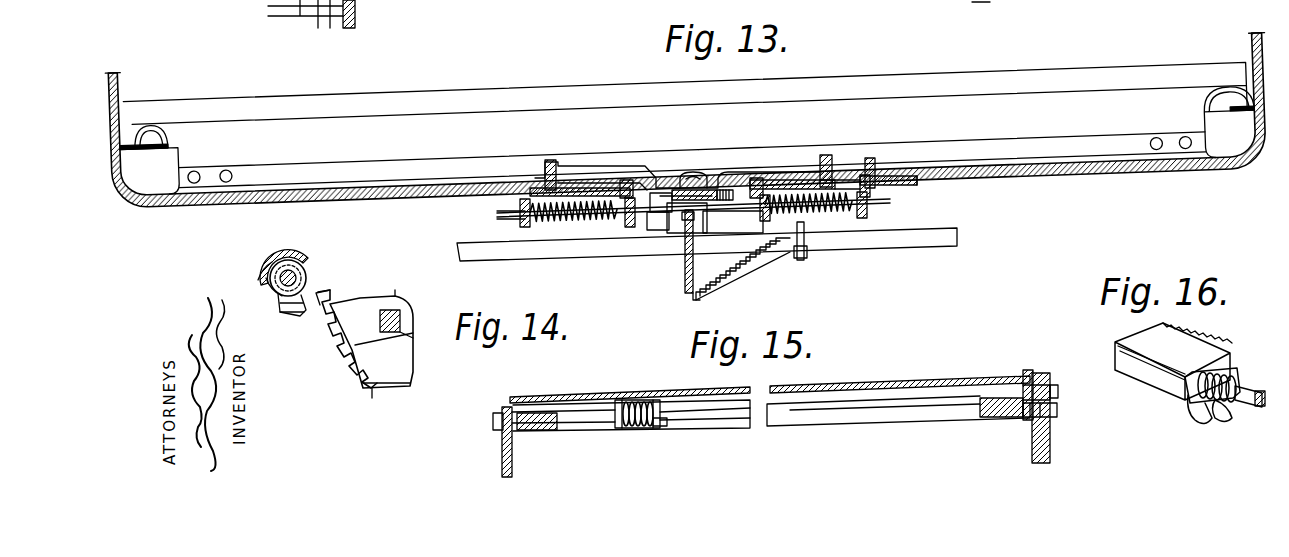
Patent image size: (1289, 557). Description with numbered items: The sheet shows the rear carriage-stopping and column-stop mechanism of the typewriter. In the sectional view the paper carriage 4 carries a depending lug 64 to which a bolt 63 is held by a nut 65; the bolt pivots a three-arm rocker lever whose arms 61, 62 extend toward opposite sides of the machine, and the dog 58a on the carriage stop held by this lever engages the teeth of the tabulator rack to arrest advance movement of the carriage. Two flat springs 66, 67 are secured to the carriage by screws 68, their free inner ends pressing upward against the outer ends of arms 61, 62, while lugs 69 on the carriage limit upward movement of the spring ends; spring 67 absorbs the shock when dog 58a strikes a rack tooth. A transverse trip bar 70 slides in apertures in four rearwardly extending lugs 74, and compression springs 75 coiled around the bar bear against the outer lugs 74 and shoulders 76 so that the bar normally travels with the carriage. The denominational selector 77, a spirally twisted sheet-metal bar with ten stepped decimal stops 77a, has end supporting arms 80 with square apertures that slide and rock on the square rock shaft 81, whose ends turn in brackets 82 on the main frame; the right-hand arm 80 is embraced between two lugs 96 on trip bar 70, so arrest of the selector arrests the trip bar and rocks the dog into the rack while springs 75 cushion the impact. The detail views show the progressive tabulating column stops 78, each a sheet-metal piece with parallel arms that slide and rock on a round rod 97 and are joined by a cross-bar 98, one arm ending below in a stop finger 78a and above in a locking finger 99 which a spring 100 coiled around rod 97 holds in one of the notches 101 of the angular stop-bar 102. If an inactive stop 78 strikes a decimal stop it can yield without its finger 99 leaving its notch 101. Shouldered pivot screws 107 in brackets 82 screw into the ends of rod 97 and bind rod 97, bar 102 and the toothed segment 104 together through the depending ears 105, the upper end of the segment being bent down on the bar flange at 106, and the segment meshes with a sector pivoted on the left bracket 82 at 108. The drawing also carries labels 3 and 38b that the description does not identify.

In FIG. 13, the top plate 3 is at (252, 124).
In FIG. 13, the paper carriage 4 is at (1050, 177).
In FIG. 13, the lug 38b is at (655, 221).
In FIG. 13, the dog 58a is at (730, 190).
In FIG. 13, the arm of three-arm rocker lever 61 is at (828, 156).
In FIG. 13, the arm of three-arm rocker lever 62 is at (623, 165).
In FIG. 13, the bolt 63 is at (700, 172).
In FIG. 13, the depending lug 64 is at (680, 190).
In FIG. 13, the nut 65 is at (733, 224).
In FIG. 13, the flat spring 66 is at (961, 145).
In FIG. 13, the flat spring 67 is at (458, 167).
In FIG. 13, the screws 68 is at (227, 171).
In FIG. 13, the lugs 69 is at (550, 161).
In FIG. 13, the trip bar 70 is at (892, 202).
In FIG. 13, the lugs 74 is at (525, 228).
In FIG. 13, the compression springs 75 is at (585, 220).
In FIG. 13, the shoulders 76 is at (518, 215).
In FIG. 13, the denominational selector 77 is at (758, 262).
In FIG. 14, the denominational selector 77 is at (342, 372).
In FIG. 13, the decimal stops 77a is at (708, 302).
In FIG. 14, the decimal stops 77a is at (318, 340).
In FIG. 14, the column stop 78 is at (280, 300).
In FIG. 15, the column stop 78 is at (614, 429).
In FIG. 16, the column stop 78 is at (1232, 417).
In FIG. 14, the stop finger 78a is at (290, 311).
In FIG. 15, the stop finger 78a is at (657, 429).
In FIG. 16, the stop finger 78a is at (1206, 420).
In FIG. 13, the supporting arms 80 is at (686, 284).
In FIG. 14, the supporting arms 80 is at (357, 300).
In FIG. 13, the rock shaft 81 is at (915, 246).
In FIG. 14, the rock shaft 81 is at (411, 345).
In FIG. 15, the brackets 82 is at (503, 450).
In FIG. 13, the lugs 96 is at (685, 262).
In FIG. 14, the rod 97 is at (300, 272).
In FIG. 15, the rod 97 is at (748, 430).
In FIG. 16, the rod 97 is at (1258, 400).
In FIG. 14, the cross-bar 98 is at (302, 293).
In FIG. 15, the cross-bar 98 is at (662, 430).
In FIG. 14, the locking finger 99 is at (305, 256).
In FIG. 15, the locking finger 99 is at (620, 400).
In FIG. 16, the locking finger 99 is at (1236, 365).
In FIG. 14, the spring 100 is at (270, 281).
In FIG. 15, the spring 100 is at (641, 404).
In FIG. 16, the spring 100 is at (1240, 380).
In FIG. 14, the notches 101 is at (300, 250).
In FIG. 16, the notches 101 is at (1200, 338).
In FIG. 14, the stop-bar 102 is at (262, 262).
In FIG. 15, the stop-bar 102 is at (870, 377).
In FIG. 16, the stop-bar 102 is at (1125, 346).
In FIG. 15, the toothed segment 104 is at (1036, 385).
In FIG. 15, the depending ears 105 is at (522, 432).
In FIG. 15, the bent-down end of segment 106 is at (1028, 371).
In FIG. 15, the shouldered pivot screws 107 is at (496, 418).
In FIG. 15, the pivot 108 is at (1030, 447).